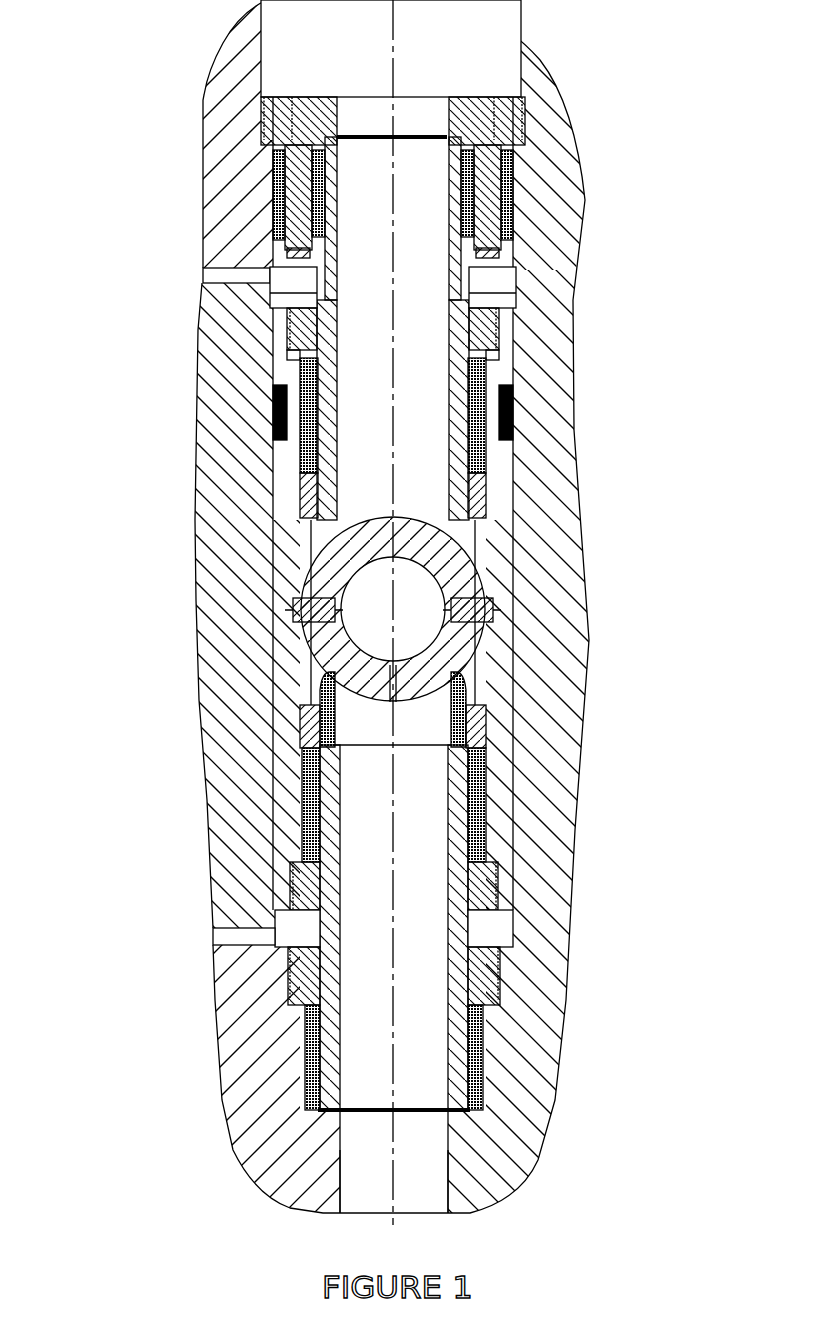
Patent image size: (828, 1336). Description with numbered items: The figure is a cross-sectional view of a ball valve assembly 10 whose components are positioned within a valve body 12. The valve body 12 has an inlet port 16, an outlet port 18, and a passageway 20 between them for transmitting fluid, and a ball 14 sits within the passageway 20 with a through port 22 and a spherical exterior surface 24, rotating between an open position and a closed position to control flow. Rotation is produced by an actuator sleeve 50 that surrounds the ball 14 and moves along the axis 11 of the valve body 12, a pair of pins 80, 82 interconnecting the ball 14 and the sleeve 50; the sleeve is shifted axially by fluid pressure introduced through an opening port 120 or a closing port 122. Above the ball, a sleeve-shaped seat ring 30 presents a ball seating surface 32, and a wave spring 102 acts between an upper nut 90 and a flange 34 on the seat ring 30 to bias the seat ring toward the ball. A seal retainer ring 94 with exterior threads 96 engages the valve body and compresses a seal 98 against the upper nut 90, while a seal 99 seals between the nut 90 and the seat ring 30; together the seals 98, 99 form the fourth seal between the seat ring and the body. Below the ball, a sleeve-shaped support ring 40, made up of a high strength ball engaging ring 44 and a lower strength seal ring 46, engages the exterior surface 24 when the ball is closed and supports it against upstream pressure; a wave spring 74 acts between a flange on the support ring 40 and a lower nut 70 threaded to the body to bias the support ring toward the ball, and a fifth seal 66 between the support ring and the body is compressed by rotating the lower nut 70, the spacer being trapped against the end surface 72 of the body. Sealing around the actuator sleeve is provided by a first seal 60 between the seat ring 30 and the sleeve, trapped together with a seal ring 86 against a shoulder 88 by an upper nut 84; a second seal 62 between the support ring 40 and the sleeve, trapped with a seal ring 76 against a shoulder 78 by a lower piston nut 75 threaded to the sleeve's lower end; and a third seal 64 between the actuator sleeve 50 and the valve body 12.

The ball valve assembly 10 is at (600, 860).
The axis 11 is at (393, 968).
The valve body 12 is at (542, 590).
The ball 14 is at (323, 680).
The inlet port 16 is at (330, 78).
The outlet port 18 is at (375, 1156).
The passageway 20 is at (375, 874).
The through port 22 is at (380, 623).
The spherical exterior surface 24 is at (475, 660).
The seat ring 30 is at (457, 372).
The ball seating surface 32 is at (300, 548).
The flange 34 is at (510, 273).
The support ring 40 is at (483, 1040).
The ball engaging ring 44 is at (480, 770).
The seal ring 46 is at (505, 915).
The actuator sleeve 50 is at (513, 470).
The first seal 60 is at (480, 445).
The second seal 62 is at (306, 835).
The third seal 64 is at (505, 425).
The fifth seal 66 is at (308, 1060).
The lower nut 70 is at (492, 1000).
The end surface 72 is at (540, 1140).
The wave spring 74 is at (300, 975).
The lower piston nut 75 is at (490, 885).
The seal ring 76 is at (466, 720).
The shoulder 78 is at (486, 712).
The pin 80 is at (493, 610).
The pin 82 is at (293, 612).
The upper nut 84 is at (483, 345).
The seal ring 86 is at (495, 500).
The shoulder 88 is at (487, 520).
The upper nut 90 is at (517, 205).
The seal retainer ring 94 is at (517, 122).
The exterior threads 96 is at (520, 160).
The seal 98 is at (513, 215).
The seal 99 is at (280, 200).
The wave spring 102 is at (232, 290).
The opening port 120 is at (217, 280).
The closing port 122 is at (228, 946).